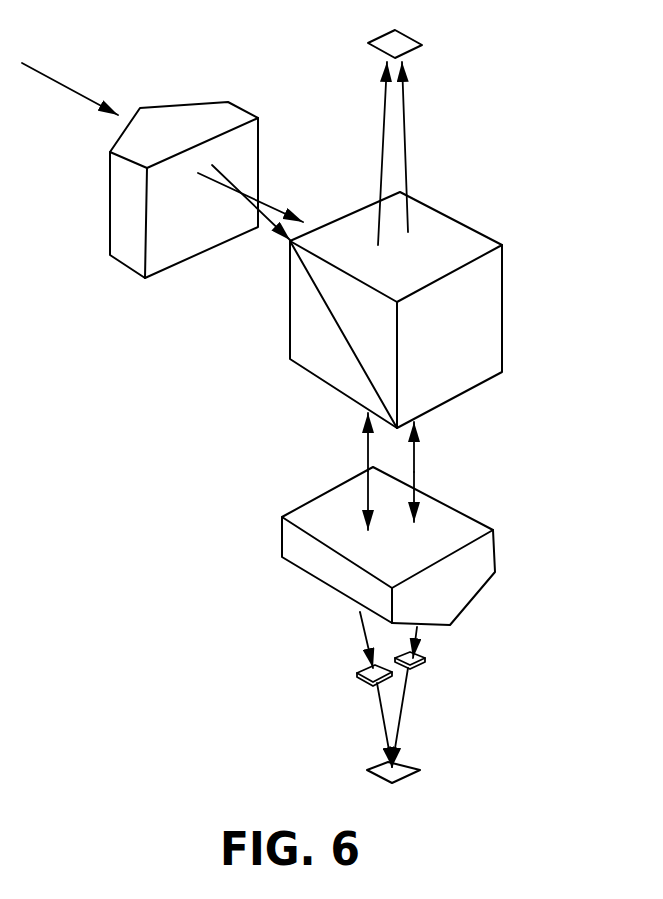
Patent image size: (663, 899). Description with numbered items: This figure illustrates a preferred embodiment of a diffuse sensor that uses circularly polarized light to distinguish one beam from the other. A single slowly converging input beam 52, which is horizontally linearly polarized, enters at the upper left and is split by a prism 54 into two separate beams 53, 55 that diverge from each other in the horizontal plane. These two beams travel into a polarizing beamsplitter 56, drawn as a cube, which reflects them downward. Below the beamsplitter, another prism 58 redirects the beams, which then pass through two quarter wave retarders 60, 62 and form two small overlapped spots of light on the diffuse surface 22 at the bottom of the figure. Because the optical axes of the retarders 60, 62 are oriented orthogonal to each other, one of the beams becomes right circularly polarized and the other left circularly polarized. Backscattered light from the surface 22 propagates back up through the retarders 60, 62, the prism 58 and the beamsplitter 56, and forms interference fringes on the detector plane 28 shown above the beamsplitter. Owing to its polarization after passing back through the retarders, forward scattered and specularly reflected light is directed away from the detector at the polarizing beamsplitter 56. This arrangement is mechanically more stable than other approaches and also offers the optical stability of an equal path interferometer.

The surface 22 is at (403, 770).
The detector plane 28 is at (377, 45).
The input beam 52 is at (52, 78).
The first beam 53 is at (281, 226).
The prism 54 is at (192, 102).
The second beam 55 is at (272, 202).
The polarizing beamsplitter 56 is at (503, 303).
The prism 58 is at (462, 508).
The quarter wave retarder 60 is at (363, 678).
The quarter wave retarder 62 is at (420, 665).